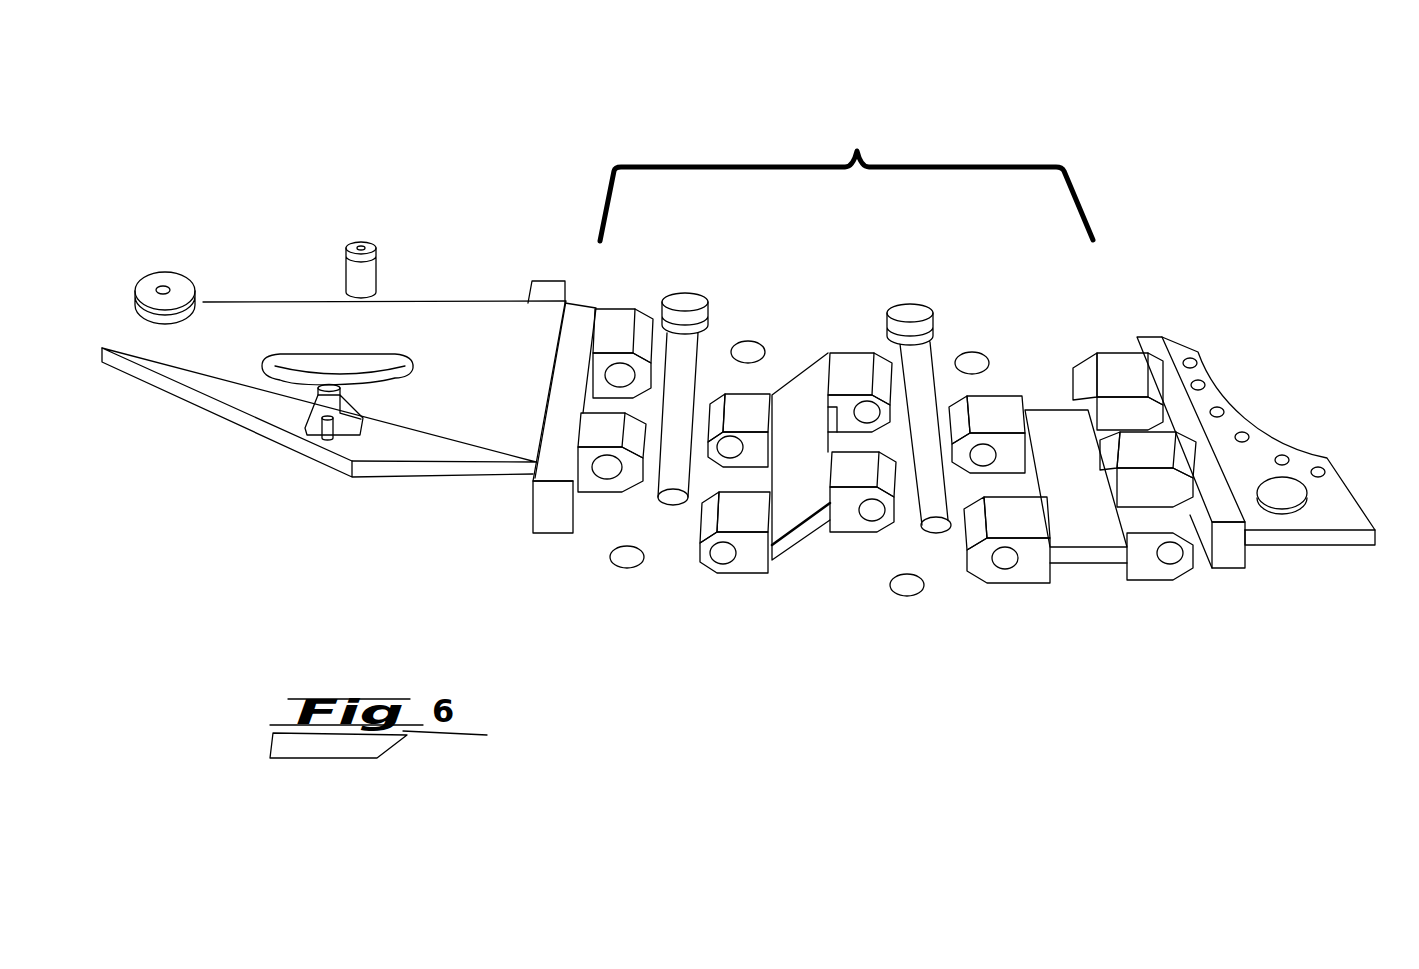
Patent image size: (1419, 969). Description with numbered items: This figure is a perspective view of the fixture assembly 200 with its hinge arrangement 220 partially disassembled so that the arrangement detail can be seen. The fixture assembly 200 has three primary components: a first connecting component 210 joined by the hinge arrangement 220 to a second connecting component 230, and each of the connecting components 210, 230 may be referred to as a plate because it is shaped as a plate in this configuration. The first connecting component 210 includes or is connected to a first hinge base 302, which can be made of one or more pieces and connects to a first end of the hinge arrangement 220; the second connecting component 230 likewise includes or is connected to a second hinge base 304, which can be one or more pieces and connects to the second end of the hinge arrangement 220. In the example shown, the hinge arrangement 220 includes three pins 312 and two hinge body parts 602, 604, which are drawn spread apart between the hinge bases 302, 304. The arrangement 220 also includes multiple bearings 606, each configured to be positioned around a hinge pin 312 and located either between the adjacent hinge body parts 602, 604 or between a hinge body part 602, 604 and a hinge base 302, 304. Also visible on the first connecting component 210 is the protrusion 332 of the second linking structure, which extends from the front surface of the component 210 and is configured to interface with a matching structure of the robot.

The fixture assembly 200 is at (1152, 166).
The first connecting component 210 is at (157, 258).
The hinge arrangement 220 is at (846, 174).
The second connecting component 230 is at (1272, 388).
The first hinge base 302 is at (602, 427).
The second hinge base 304 is at (1117, 355).
The pins 312 is at (655, 490).
The protrusion 332 is at (196, 282).
The hinge body part 602 is at (797, 558).
The hinge body part 604 is at (1087, 588).
The bearings 606 is at (766, 352).